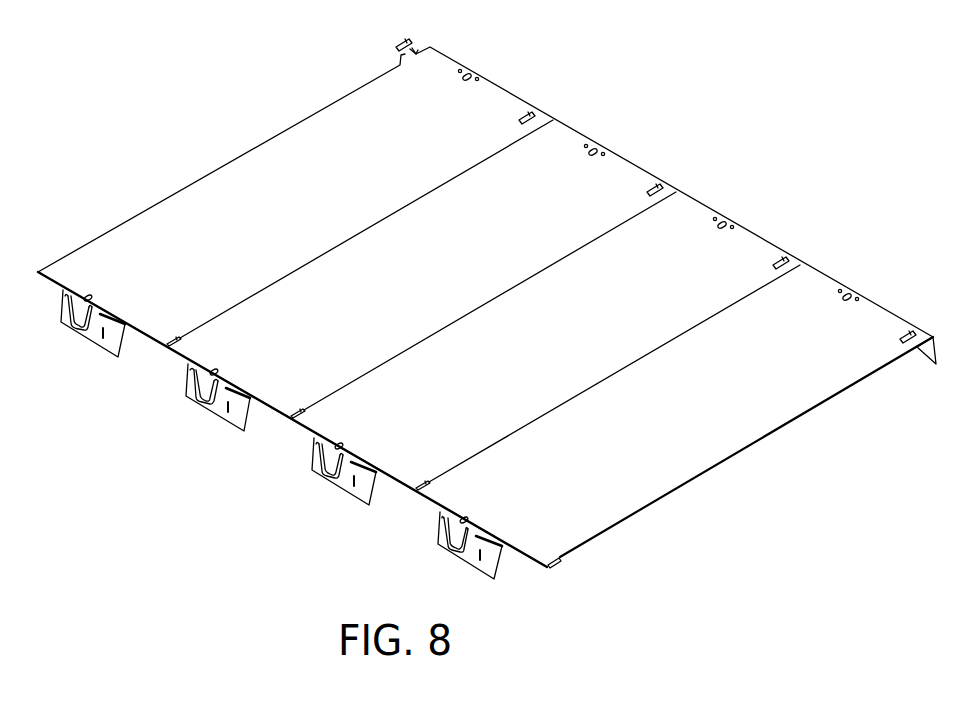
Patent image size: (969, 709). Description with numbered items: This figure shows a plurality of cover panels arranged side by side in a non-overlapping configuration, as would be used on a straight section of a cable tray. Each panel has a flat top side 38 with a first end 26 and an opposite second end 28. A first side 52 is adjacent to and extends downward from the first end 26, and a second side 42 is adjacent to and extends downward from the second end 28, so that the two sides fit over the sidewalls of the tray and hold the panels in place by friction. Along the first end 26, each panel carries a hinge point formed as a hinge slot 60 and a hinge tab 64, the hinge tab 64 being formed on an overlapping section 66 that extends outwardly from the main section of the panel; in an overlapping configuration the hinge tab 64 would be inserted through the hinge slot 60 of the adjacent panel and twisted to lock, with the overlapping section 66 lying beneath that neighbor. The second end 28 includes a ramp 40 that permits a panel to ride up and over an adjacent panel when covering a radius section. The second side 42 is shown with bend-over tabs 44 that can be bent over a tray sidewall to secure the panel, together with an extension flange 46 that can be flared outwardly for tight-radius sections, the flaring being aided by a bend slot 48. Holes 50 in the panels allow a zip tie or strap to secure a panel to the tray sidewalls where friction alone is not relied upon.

The first end 26 is at (882, 348).
The second end 28 is at (562, 502).
The top side 38 is at (352, 205).
The ramp 40 is at (558, 565).
The second side 42 is at (238, 420).
The bend-over tab 44 is at (450, 544).
The extension flange 46 is at (377, 488).
The bend slot 48 is at (353, 486).
The hole 50 is at (86, 295).
The first side 52 is at (767, 238).
The hinge slot 60 is at (904, 330).
The hinge tab 64 is at (397, 46).
The overlapping section 66 is at (417, 52).